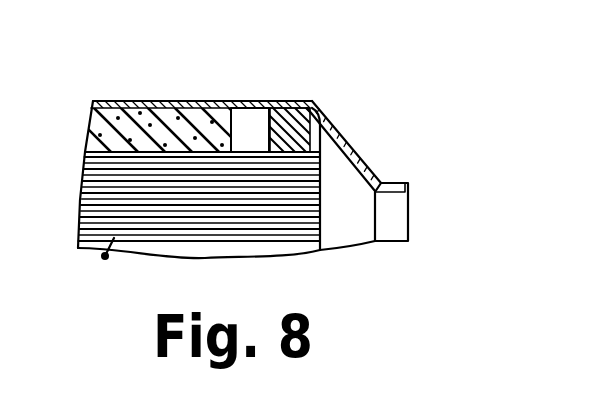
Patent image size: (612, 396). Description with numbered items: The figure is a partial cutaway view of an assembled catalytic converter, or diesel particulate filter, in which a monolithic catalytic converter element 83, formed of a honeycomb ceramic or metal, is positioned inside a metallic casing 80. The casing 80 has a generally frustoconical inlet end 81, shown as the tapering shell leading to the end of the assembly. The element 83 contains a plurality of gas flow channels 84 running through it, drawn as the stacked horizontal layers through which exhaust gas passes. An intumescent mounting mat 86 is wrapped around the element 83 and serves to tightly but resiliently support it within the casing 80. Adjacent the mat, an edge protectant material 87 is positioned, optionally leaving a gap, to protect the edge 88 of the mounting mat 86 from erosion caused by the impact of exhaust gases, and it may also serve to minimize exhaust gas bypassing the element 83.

The metallic casing 80 is at (342, 130).
The inlet end 81 is at (395, 220).
The catalytic converter element 83 is at (105, 256).
The gas flow channels 84 is at (223, 231).
The intumescent mounting mat 86 is at (175, 120).
The edge protectant material 87 is at (306, 112).
The edge of mounting mat 88 is at (242, 118).